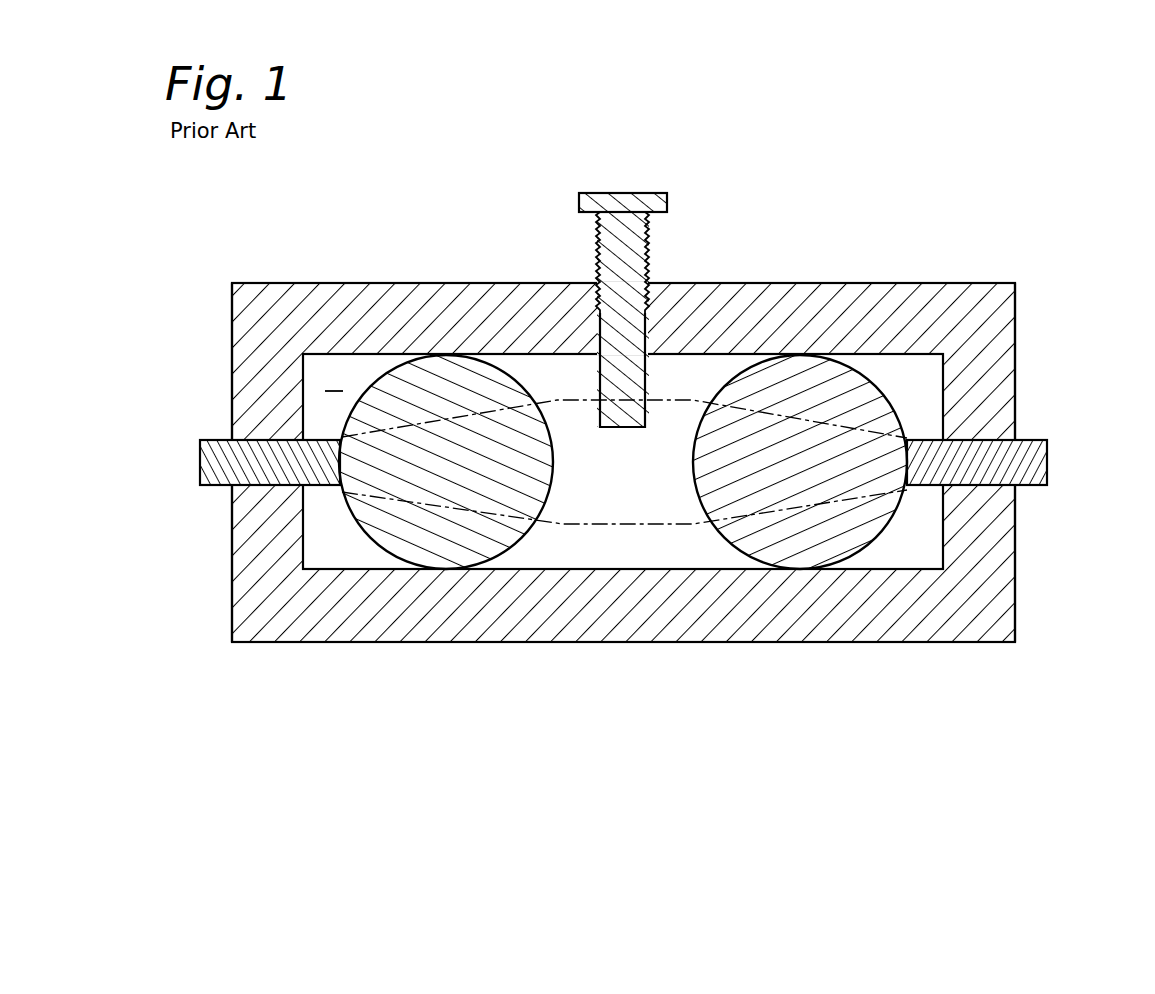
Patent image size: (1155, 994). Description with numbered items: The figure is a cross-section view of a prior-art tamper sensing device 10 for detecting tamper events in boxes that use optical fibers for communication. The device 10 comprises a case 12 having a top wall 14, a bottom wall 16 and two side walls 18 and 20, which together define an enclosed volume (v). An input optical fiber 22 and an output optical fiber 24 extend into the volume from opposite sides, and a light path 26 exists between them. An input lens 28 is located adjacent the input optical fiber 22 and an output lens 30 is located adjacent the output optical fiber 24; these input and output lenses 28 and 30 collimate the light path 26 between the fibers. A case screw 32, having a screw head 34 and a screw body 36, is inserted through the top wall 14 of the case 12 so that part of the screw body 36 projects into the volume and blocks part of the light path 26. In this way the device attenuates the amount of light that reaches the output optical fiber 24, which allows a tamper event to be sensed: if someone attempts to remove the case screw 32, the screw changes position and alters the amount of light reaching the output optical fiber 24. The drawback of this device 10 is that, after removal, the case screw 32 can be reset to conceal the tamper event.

The tamper sensing device 10 is at (1000, 200).
The case 12 is at (891, 283).
The top wall 14 is at (781, 283).
The bottom wall 16 is at (483, 643).
The side wall 18 is at (1016, 360).
The side wall 20 is at (231, 358).
The input optical fiber 22 is at (1031, 486).
The output optical fiber 24 is at (209, 487).
The light path 26 is at (617, 526).
The input lens 28 is at (856, 556).
The output lens 30 is at (384, 552).
The case screw 32 is at (629, 230).
The screw head 34 is at (602, 195).
The screw body 36 is at (597, 393).